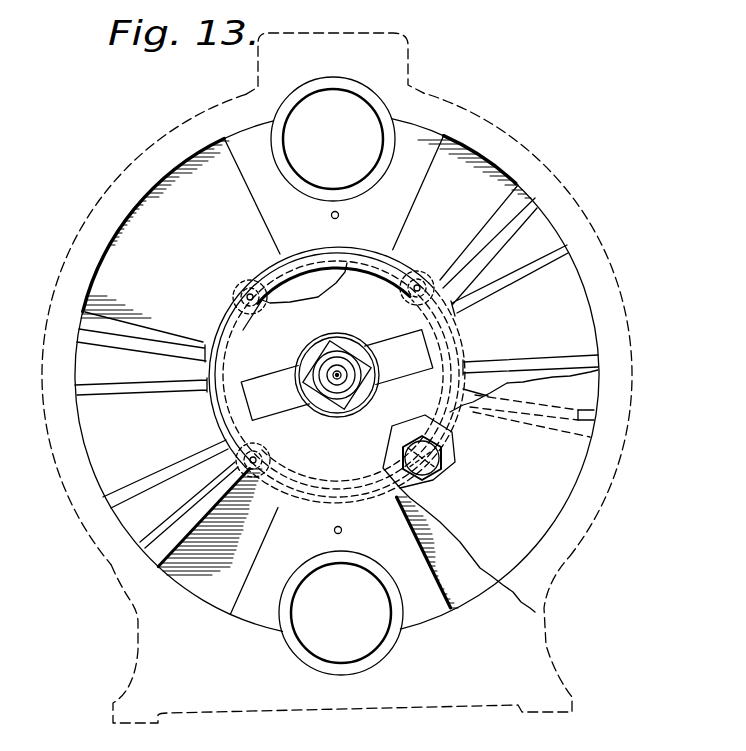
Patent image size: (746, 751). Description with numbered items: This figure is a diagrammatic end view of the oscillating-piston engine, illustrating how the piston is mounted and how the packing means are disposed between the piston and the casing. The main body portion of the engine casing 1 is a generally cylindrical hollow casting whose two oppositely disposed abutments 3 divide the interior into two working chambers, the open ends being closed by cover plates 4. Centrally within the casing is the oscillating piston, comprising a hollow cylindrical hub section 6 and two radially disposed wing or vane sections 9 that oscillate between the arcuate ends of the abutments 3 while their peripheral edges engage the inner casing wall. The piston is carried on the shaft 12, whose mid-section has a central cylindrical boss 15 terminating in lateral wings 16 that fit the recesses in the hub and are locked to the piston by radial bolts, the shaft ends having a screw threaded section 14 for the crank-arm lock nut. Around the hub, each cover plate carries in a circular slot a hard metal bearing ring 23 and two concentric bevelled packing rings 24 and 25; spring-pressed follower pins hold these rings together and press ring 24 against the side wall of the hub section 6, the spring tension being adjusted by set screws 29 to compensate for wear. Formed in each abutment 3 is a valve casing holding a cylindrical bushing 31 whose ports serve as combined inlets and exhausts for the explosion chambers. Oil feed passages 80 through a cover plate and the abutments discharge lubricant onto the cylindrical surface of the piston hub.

The main body portion of the engine casing 1 is at (618, 425).
The abutments 3 is at (410, 197).
The cover plates 4 is at (499, 491).
The hollow cylindrical hub section 6 is at (352, 390).
The wing or vane sections 9 is at (571, 312).
The shaft 12 is at (353, 386).
The screw threaded section 14 is at (578, 257).
The central cylindrical boss 15 is at (341, 336).
The lateral wings 16 is at (406, 370).
The hard metal bearing ring 23 is at (226, 312).
The packing ring 24 is at (345, 272).
The packing ring 25 is at (296, 253).
The set screws 29 is at (243, 280).
The cylindrical bushing 31 is at (395, 136).
The oil feed passages 80 is at (339, 215).